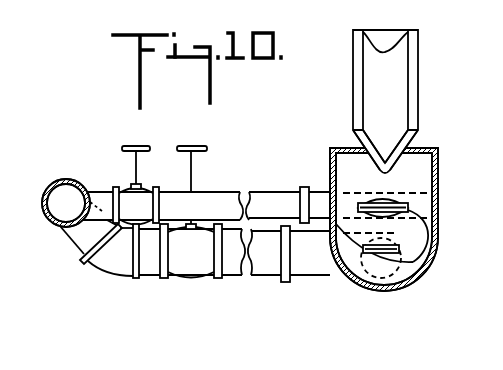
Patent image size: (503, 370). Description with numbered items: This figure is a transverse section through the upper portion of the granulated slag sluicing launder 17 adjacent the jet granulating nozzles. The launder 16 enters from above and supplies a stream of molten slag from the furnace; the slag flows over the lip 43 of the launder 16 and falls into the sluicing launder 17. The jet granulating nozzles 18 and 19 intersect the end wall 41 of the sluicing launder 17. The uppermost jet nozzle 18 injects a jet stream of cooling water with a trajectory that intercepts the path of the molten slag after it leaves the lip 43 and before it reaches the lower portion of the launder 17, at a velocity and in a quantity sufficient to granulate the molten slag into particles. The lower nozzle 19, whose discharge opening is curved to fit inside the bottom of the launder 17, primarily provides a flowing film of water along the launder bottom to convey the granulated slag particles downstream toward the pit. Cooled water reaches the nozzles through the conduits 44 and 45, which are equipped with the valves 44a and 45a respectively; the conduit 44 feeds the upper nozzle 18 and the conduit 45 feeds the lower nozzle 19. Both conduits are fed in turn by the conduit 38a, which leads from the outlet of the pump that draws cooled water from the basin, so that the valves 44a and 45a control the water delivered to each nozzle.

The launder 16 is at (403, 50).
The granulated slag sluicing launder 17 is at (438, 163).
The jet granulating nozzle 18 is at (404, 207).
The jet granulating nozzle 19 is at (396, 251).
The conduit 38a is at (44, 186).
The end wall 41 is at (415, 155).
The lip 43 is at (350, 150).
The conduit 44 is at (316, 197).
The valve 44a is at (131, 200).
The conduit 45 is at (318, 265).
The valve 45a is at (190, 265).